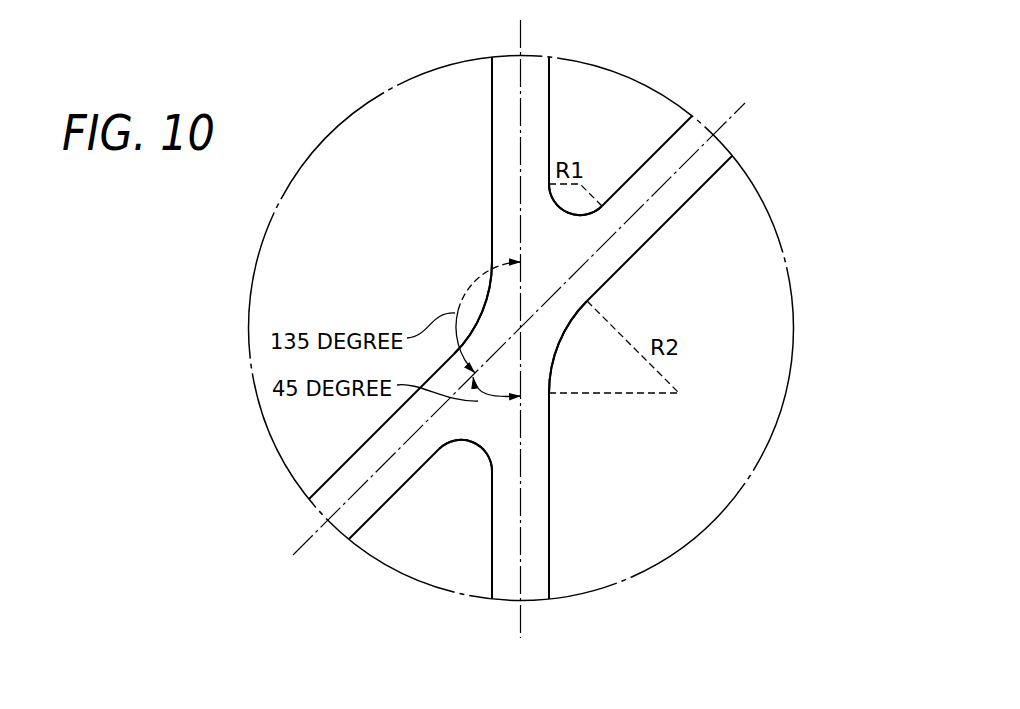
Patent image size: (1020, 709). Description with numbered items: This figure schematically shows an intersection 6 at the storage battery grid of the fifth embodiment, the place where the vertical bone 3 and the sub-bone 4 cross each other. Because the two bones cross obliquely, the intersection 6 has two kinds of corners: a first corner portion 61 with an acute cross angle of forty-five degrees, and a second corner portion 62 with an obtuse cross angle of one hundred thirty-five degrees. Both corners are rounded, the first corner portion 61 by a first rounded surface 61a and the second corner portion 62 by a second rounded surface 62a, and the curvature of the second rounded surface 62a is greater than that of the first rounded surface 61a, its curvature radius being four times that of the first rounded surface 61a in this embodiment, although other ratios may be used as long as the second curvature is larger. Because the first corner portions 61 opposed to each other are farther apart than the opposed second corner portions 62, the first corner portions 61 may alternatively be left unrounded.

The vertical bone 3 is at (551, 527).
The sub-bone 4 is at (363, 445).
The intersection 6 is at (403, 180).
The first corner portion 61 is at (591, 150).
The first rounded surface 61a is at (572, 211).
The second corner portion 62 is at (430, 302).
The second rounded surface 62a is at (480, 312).